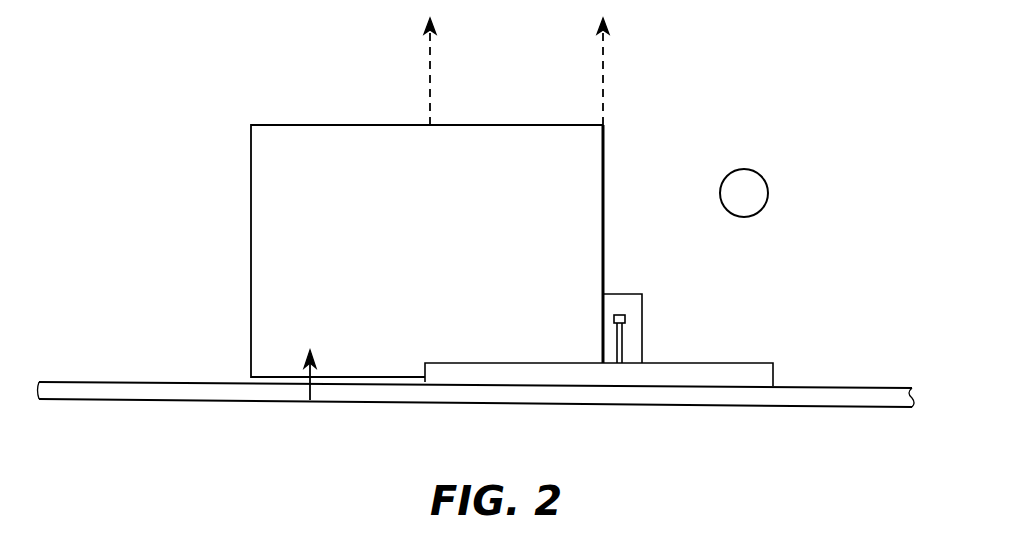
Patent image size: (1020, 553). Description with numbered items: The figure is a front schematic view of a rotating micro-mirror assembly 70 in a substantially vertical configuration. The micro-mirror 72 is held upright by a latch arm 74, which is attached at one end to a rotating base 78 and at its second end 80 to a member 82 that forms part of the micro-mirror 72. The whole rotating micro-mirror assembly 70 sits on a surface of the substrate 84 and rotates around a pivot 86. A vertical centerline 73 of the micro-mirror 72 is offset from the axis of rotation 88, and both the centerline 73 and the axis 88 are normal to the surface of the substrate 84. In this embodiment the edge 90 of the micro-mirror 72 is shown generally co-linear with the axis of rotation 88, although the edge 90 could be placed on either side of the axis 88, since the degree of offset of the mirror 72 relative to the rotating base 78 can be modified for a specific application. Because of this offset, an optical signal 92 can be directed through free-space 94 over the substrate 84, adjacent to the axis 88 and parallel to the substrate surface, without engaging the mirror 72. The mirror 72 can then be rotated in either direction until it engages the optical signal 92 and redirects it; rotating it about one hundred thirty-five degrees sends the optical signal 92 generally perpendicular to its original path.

The rotating micro-mirror assembly 70 is at (764, 80).
The micro-mirror 72 is at (295, 248).
The vertical centerline 73 is at (430, 73).
The latch arm 74 is at (620, 342).
The rotating base 78 is at (764, 378).
The second end 80 is at (626, 320).
The member 82 is at (626, 305).
The substrate 84 is at (131, 381).
The pivot 86 is at (310, 375).
The axis of rotation 88 is at (603, 77).
The edge 90 is at (603, 172).
The optical signal 92 is at (744, 193).
The free-space 94 is at (775, 278).